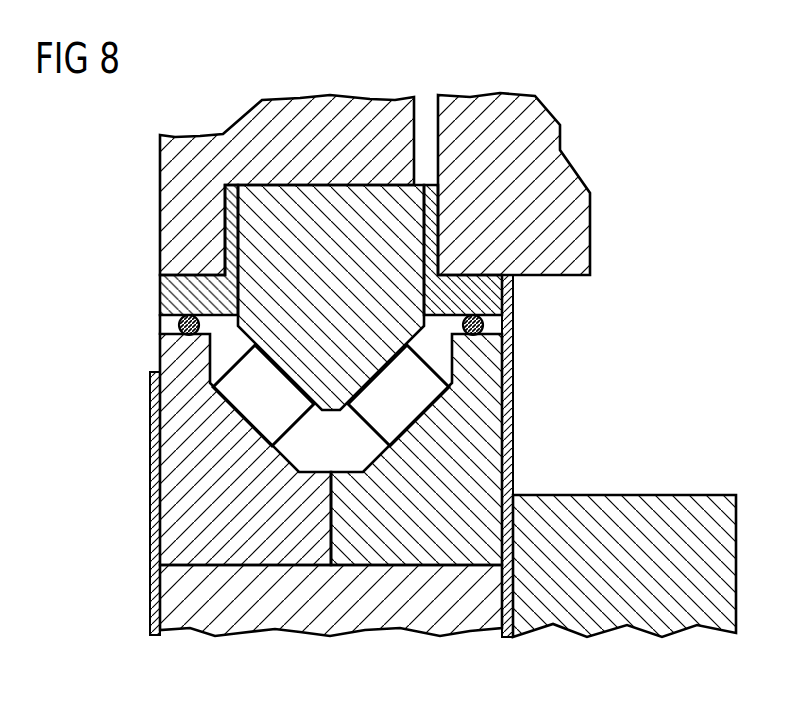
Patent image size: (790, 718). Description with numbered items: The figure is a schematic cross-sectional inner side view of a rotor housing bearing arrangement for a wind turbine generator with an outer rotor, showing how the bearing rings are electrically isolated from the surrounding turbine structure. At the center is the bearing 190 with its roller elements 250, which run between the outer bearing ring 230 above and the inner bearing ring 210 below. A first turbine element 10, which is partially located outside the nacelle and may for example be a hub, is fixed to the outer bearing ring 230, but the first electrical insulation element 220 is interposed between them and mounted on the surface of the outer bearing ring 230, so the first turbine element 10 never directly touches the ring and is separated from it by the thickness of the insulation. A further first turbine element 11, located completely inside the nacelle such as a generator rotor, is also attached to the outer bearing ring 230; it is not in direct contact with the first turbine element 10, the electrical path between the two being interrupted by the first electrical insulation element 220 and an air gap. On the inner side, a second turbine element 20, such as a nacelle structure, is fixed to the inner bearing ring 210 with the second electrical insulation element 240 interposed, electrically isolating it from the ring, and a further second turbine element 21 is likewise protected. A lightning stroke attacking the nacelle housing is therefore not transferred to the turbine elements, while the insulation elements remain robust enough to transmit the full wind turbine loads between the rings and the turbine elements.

The first turbine element 10 is at (582, 218).
The further first turbine element 11 is at (168, 177).
The second turbine element 20 is at (637, 620).
The further second turbine element 21 is at (278, 617).
The bearing 190 is at (257, 398).
The roller elements 250 is at (331, 395).
The inner bearing ring 210 is at (183, 525).
The first electrical insulation element 220 is at (172, 300).
The outer bearing ring 230 is at (262, 244).
The second electrical insulation element 240 is at (155, 470).